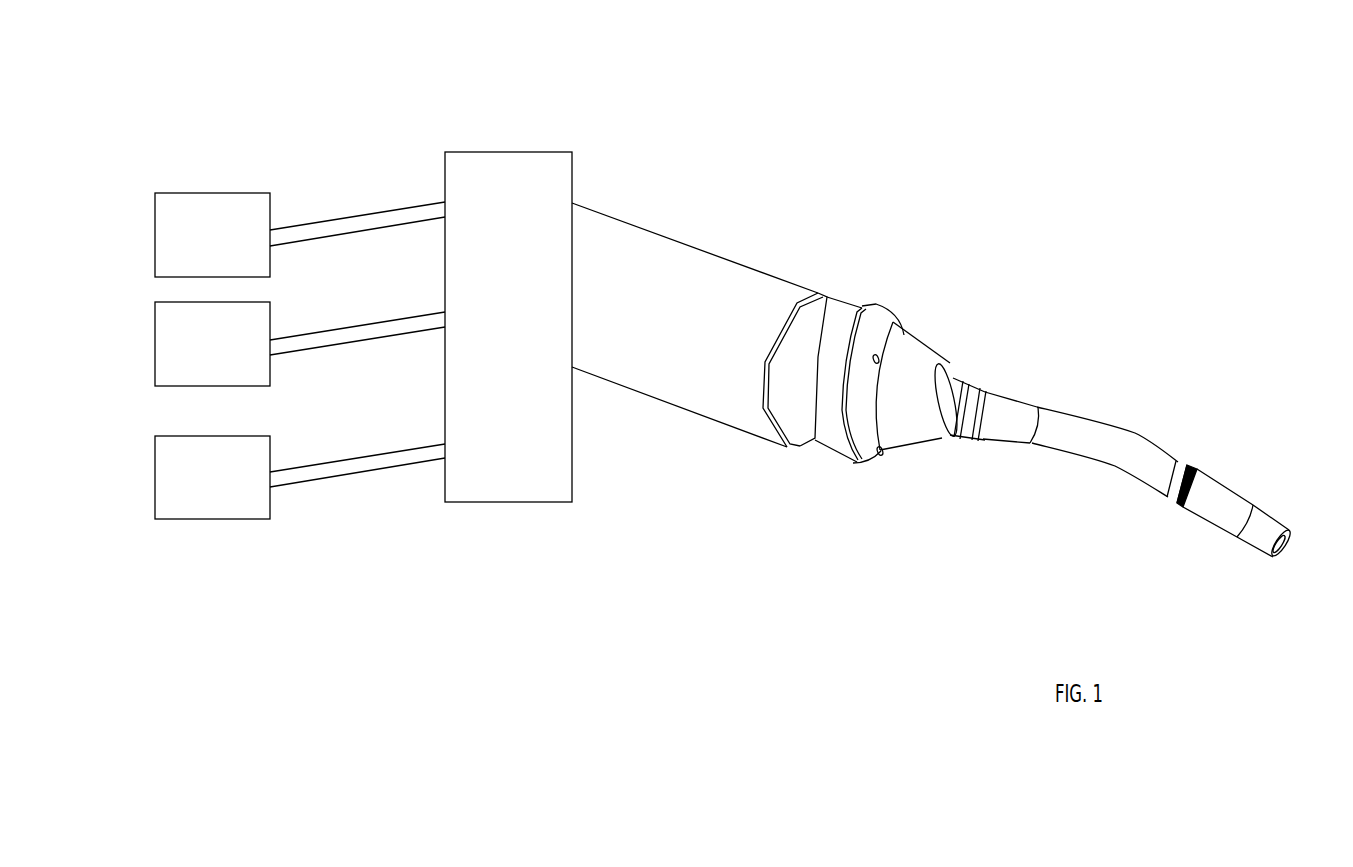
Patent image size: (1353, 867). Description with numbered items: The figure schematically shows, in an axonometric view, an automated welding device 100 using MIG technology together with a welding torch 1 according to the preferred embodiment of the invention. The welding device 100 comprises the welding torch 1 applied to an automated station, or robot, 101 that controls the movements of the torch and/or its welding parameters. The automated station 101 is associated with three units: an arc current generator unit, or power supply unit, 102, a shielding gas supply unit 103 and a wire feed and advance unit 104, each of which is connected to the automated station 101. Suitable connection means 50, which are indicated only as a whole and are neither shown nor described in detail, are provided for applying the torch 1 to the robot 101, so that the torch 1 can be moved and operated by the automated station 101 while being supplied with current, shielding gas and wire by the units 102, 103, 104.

The automated welding device 100 is at (1203, 121).
The welding torch 1 is at (1231, 395).
The connection means 50 is at (938, 272).
The automated station 101 is at (628, 265).
The arc current generator unit 102 is at (212, 498).
The shielding gas supply unit 103 is at (168, 353).
The wire feed and advance unit 104 is at (197, 207).